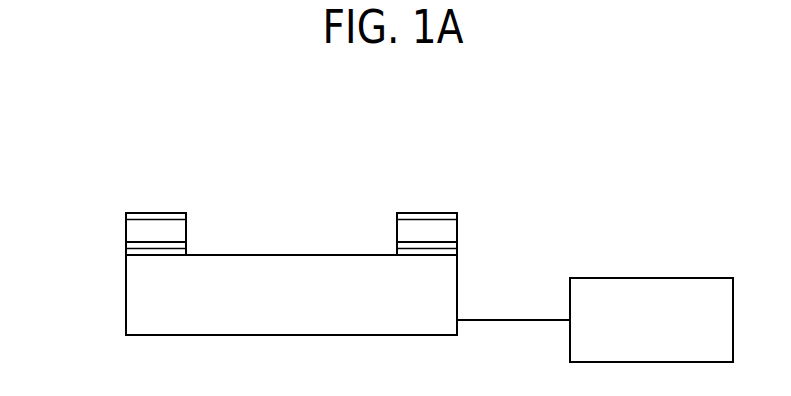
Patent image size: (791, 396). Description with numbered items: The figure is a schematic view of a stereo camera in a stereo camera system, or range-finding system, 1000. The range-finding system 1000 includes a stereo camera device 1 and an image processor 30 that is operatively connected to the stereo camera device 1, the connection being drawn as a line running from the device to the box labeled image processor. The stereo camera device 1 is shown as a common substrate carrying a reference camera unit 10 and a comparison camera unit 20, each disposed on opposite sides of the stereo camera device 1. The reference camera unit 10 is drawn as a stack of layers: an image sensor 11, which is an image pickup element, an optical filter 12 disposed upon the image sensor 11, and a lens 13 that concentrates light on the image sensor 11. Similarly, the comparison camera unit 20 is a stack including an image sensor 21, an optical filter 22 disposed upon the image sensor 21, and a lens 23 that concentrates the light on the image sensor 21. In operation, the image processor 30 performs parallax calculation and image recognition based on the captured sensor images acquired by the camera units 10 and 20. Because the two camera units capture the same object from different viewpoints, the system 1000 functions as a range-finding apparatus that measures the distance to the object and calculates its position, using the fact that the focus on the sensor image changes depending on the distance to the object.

The stereo camera system 1000 is at (535, 127).
The stereo camera device 1 is at (243, 167).
The reference camera unit 10 is at (472, 229).
The image sensor 11 is at (398, 251).
The optical filter 12 is at (457, 243).
The lens 13 is at (398, 216).
The comparison camera unit 20 is at (112, 229).
The image sensor 21 is at (186, 251).
The optical filter 22 is at (126, 246).
The lens 23 is at (186, 216).
The image processor 30 is at (680, 278).